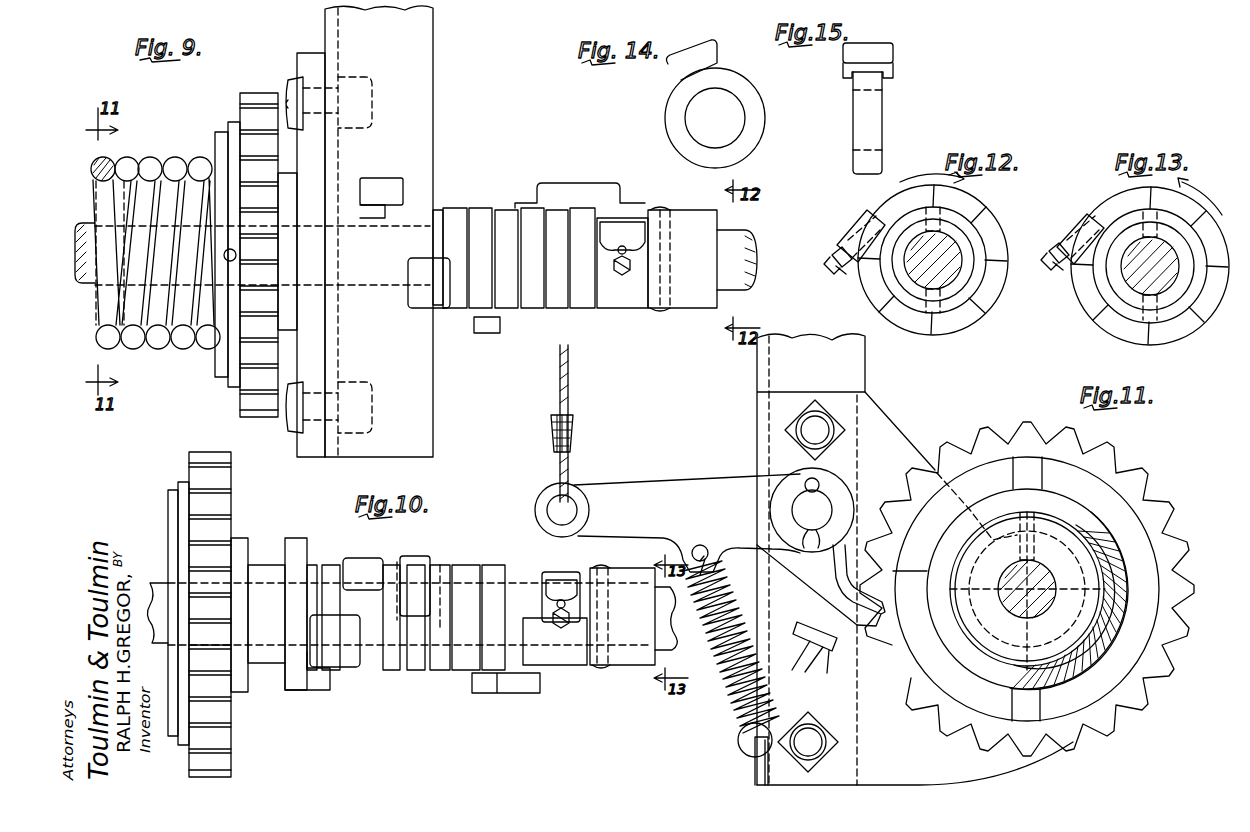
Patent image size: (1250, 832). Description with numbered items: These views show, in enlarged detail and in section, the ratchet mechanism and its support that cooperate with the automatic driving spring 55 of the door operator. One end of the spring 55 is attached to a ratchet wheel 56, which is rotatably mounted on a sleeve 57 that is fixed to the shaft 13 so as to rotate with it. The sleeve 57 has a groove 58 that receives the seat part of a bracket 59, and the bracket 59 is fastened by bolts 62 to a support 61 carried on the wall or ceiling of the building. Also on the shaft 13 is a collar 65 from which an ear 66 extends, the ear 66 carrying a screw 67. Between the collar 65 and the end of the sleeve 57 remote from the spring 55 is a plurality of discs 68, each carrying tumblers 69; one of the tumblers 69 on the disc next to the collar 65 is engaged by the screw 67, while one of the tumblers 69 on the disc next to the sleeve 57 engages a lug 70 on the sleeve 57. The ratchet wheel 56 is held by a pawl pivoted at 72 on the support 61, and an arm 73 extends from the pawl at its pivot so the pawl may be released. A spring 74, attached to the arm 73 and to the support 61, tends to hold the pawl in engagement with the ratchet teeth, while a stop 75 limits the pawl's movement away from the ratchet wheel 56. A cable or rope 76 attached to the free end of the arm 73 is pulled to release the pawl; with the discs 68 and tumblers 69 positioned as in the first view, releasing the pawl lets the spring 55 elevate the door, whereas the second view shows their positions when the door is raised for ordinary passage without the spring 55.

In FIG. 9, the shaft 13 is at (92, 223).
In FIG. 12, the shaft 13 is at (907, 265).
In FIG. 13, the shaft 13 is at (1130, 296).
In FIG. 11, the shaft 13 is at (1040, 567).
In FIG. 10, the shaft 13 is at (162, 582).
In FIG. 9, the automatic spring 55 is at (180, 160).
In FIG. 11, the automatic spring 55 is at (1087, 535).
In FIG. 9, the ratchet wheel 56 is at (258, 93).
In FIG. 11, the ratchet wheel 56 is at (1117, 449).
In FIG. 10, the ratchet wheel 56 is at (231, 482).
In FIG. 9, the sleeve 57 is at (318, 317).
In FIG. 11, the sleeve 57 is at (1027, 591).
In FIG. 10, the sleeve 57 is at (243, 538).
In FIG. 9, the groove 58 is at (333, 320).
In FIG. 11, the groove 58 is at (1026, 589).
In FIG. 10, the groove 58 is at (268, 565).
In FIG. 9, the bracket 59 is at (303, 55).
In FIG. 11, the bracket 59 is at (887, 422).
In FIG. 9, the support 61 is at (425, 50).
In FIG. 11, the support 61 is at (766, 373).
In FIG. 9, the bolts 62 is at (287, 80).
In FIG. 11, the bolts 62 is at (790, 426).
In FIG. 9, the collar 65 is at (647, 303).
In FIG. 12, the collar 65 is at (975, 300).
In FIG. 13, the collar 65 is at (1105, 305).
In FIG. 10, the collar 65 is at (622, 655).
In FIG. 9, the ear 66 is at (633, 220).
In FIG. 12, the ear 66 is at (858, 222).
In FIG. 13, the ear 66 is at (1078, 222).
In FIG. 10, the ear 66 is at (555, 575).
In FIG. 9, the screw 67 is at (622, 276).
In FIG. 12, the screw 67 is at (826, 256).
In FIG. 13, the screw 67 is at (1052, 252).
In FIG. 10, the screw 67 is at (565, 630).
In FIG. 9, the discs 68 is at (482, 220).
In FIG. 14, the discs 68 is at (762, 118).
In FIG. 15, the discs 68 is at (880, 105).
In FIG. 12, the discs 68 is at (965, 330).
In FIG. 13, the discs 68 is at (1080, 296).
In FIG. 10, the discs 68 is at (470, 582).
In FIG. 9, the tumblers 69 is at (608, 185).
In FIG. 14, the tumblers 69 is at (697, 40).
In FIG. 15, the tumblers 69 is at (880, 43).
In FIG. 12, the tumblers 69 is at (925, 335).
In FIG. 13, the tumblers 69 is at (1107, 208).
In FIG. 10, the tumblers 69 is at (335, 615).
In FIG. 9, the lug 70 is at (388, 178).
In FIG. 10, the lug 70 is at (322, 688).
In FIG. 11, the pivot 72 is at (824, 502).
In FIG. 11, the arm 73 is at (680, 490).
In FIG. 11, the spring 74 is at (735, 708).
In FIG. 11, the stop 75 is at (815, 672).
In FIG. 11, the cable or rope 76 is at (568, 386).